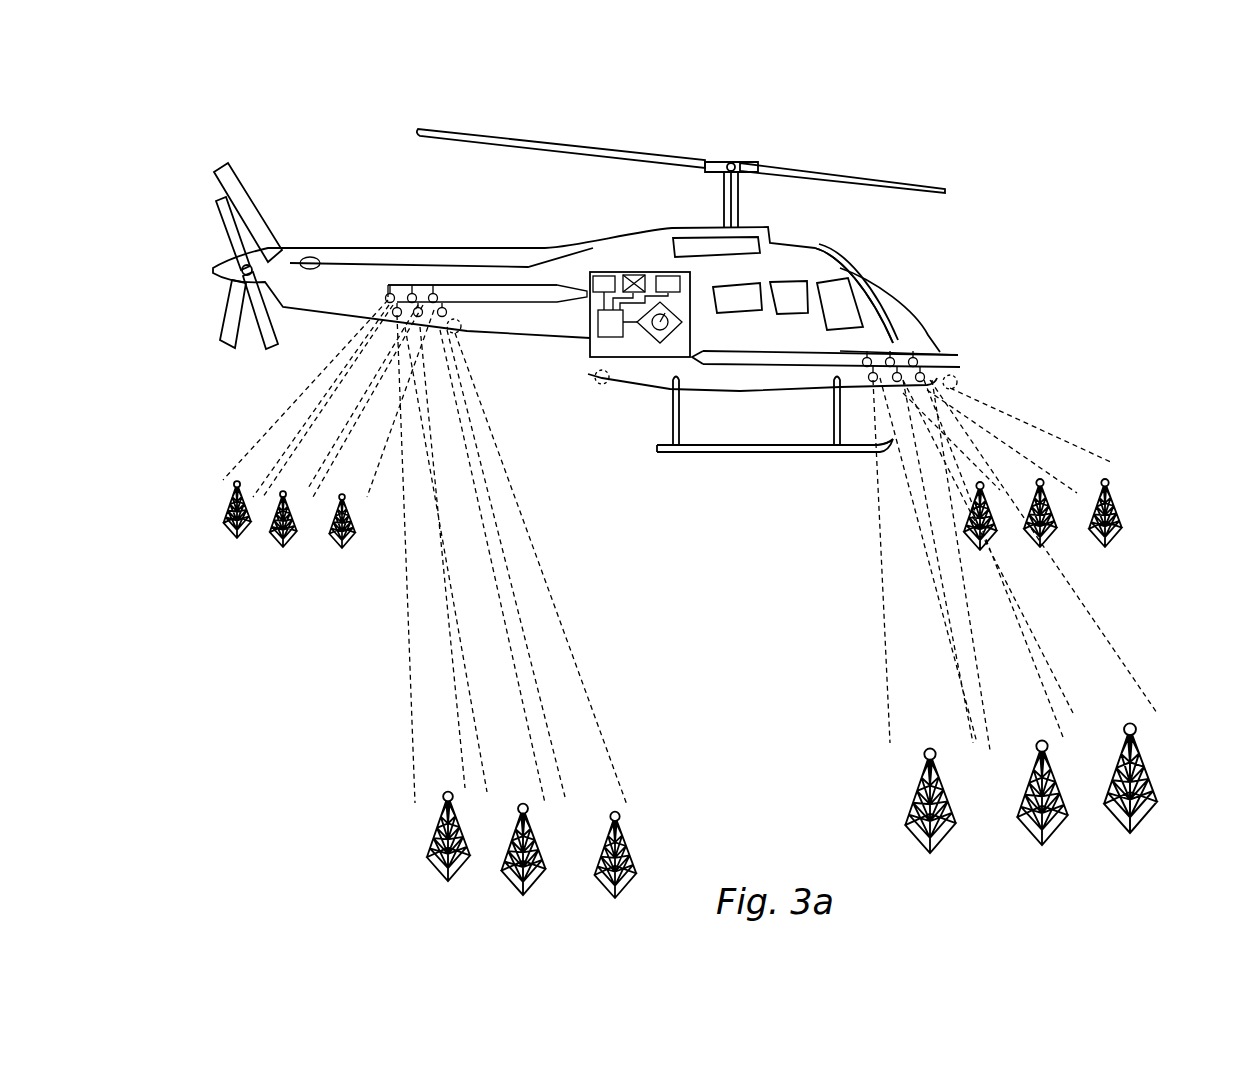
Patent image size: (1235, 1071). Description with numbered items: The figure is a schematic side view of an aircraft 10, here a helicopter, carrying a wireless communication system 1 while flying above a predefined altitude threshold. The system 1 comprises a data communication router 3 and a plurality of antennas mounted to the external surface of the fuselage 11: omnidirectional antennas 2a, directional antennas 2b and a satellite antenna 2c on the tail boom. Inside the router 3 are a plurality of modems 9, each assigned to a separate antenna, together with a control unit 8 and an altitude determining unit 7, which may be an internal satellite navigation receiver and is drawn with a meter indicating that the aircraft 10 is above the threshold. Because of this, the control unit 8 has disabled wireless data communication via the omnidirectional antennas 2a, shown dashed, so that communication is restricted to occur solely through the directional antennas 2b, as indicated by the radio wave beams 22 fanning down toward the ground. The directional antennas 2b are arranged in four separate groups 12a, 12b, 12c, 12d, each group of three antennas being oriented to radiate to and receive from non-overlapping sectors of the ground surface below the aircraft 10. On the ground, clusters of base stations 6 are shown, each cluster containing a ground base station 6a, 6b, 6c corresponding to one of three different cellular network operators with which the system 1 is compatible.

The wireless communication system 1 is at (549, 208).
The omnidirectional antenna 2a is at (463, 332).
The directional antenna 2b is at (412, 292).
The satellite antenna 2c is at (311, 258).
The data communication router 3 is at (686, 350).
The ground base station 6 is at (1112, 573).
The ground base station 6a is at (232, 537).
The ground base station 6b is at (285, 548).
The ground base station 6c is at (345, 550).
The altitude determining unit 7 is at (661, 345).
The control unit 8 is at (596, 375).
The modem 9 is at (597, 275).
The aircraft 10 is at (838, 140).
The fuselage 11 is at (835, 252).
The group of directional antennas 12a is at (896, 352).
The group of directional antennas 12b is at (828, 363).
The group of directional antennas 12c is at (518, 302).
The group of directional antennas 12d is at (463, 285).
The radio wave beams 22 is at (242, 407).